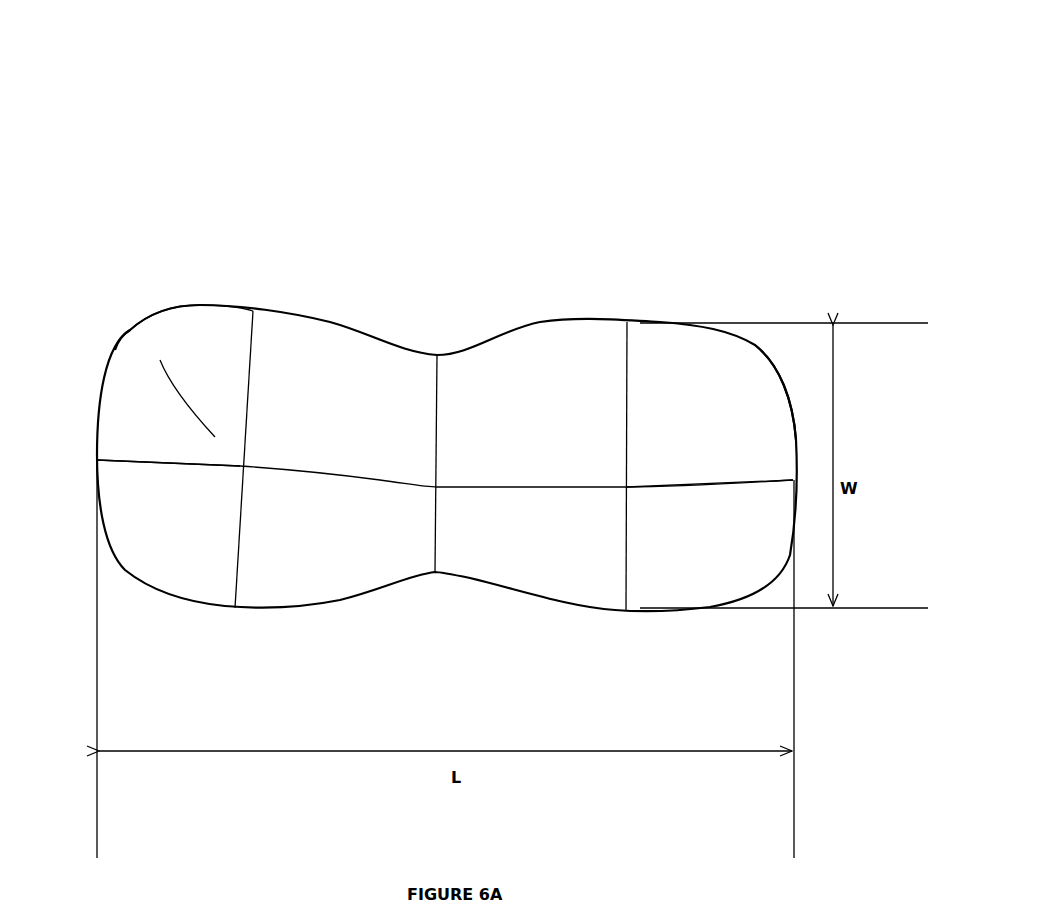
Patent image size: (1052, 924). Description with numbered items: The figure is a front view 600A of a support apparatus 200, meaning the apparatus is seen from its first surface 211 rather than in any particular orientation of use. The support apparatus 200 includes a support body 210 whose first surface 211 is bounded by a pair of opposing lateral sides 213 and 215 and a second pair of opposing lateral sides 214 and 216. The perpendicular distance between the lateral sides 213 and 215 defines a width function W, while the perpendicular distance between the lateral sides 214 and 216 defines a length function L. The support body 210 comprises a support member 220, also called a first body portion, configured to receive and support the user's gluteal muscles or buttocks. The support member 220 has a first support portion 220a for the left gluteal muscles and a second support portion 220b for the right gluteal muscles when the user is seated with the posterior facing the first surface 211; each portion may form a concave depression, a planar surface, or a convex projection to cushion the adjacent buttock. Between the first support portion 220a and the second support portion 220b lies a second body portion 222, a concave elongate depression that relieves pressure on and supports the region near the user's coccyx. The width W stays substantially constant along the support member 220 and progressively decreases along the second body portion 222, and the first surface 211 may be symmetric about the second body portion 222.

The front view 600A is at (37, 105).
The support apparatus 200 is at (697, 378).
The support body 210 is at (197, 353).
The first surface 211 is at (218, 437).
The lateral side 213 is at (238, 307).
The lateral side 214 is at (790, 420).
The lateral side 215 is at (612, 612).
The lateral side 216 is at (136, 333).
The support member 220 is at (280, 565).
The first support portion 220a is at (636, 485).
The second support portion 220b is at (240, 505).
The second body portion 222 is at (432, 353).